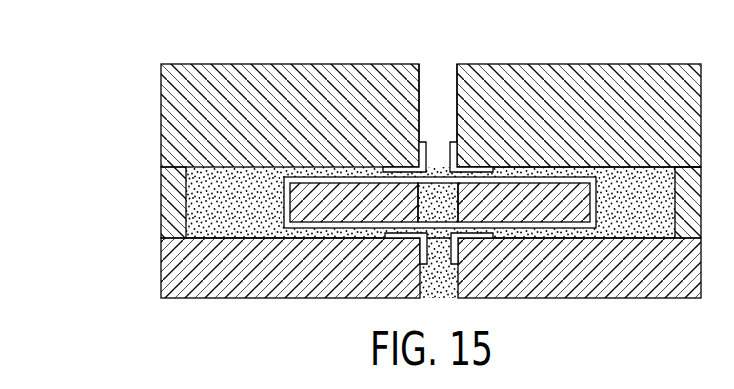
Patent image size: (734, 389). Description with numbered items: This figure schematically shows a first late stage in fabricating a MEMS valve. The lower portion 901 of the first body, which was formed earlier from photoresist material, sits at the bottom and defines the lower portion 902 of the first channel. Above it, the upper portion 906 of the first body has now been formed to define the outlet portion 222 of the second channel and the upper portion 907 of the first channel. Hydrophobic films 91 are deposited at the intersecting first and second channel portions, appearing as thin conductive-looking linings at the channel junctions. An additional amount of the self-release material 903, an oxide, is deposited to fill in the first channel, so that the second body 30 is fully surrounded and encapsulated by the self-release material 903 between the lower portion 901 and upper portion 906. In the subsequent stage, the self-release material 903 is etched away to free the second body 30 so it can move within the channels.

The upper portion of the first body 906 is at (175, 102).
The lower portion of the first body 901 is at (185, 274).
The self-release material 903 is at (217, 217).
The lower portion of the first channel 902 is at (648, 233).
The upper portion of the first channel 907 is at (615, 168).
The outlet portion of the second channel 222 is at (419, 87).
The second body 30 is at (325, 205).
The hydrophobic films 91 is at (422, 143).